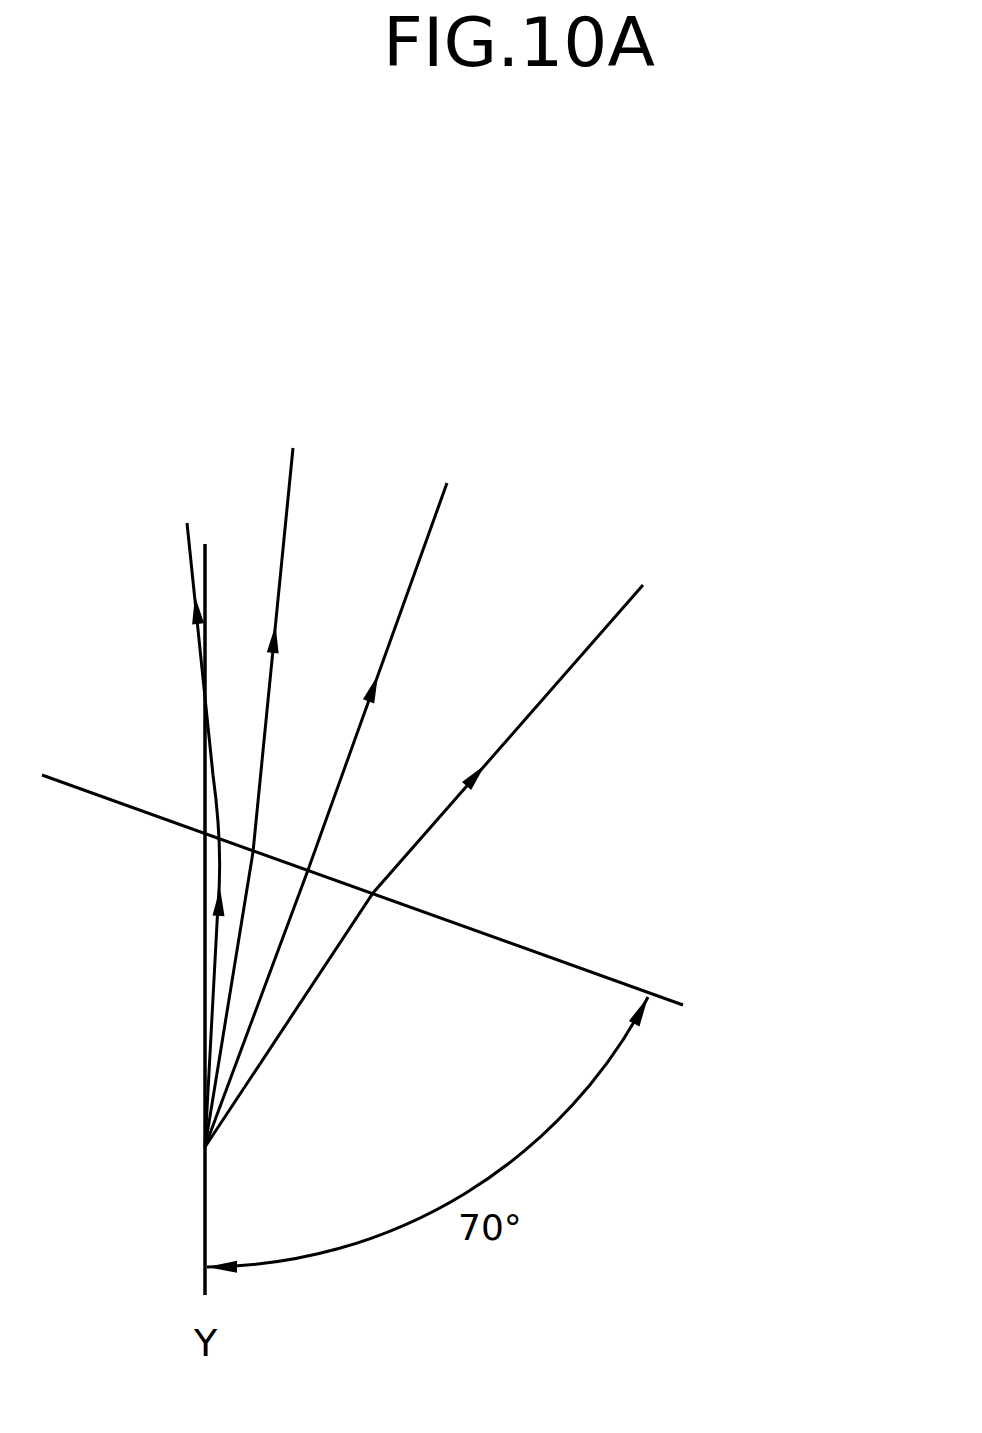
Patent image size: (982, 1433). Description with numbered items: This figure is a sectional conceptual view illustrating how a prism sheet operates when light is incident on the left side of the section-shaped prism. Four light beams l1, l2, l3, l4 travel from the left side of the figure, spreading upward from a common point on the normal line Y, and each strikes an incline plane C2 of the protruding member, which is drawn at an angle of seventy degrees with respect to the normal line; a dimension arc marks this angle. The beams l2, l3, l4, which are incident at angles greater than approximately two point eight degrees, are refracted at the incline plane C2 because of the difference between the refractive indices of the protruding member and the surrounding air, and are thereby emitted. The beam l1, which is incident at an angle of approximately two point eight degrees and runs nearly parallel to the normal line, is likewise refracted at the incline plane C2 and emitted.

The beam 1 l1 is at (153, 835).
The beam 2 l2 is at (289, 791).
The beam 3 l3 is at (355, 815).
The beam 4 l4 is at (426, 866).
The incline plane C2 is at (547, 953).